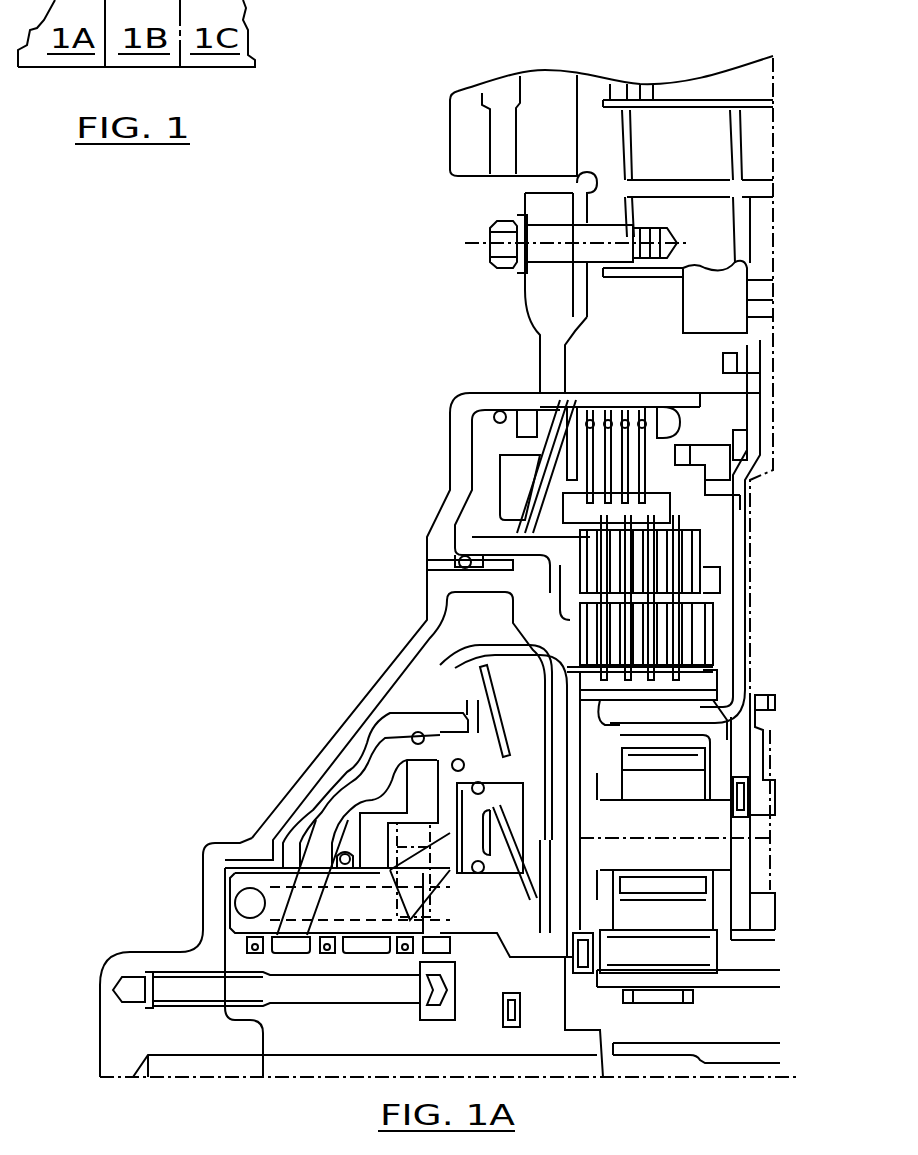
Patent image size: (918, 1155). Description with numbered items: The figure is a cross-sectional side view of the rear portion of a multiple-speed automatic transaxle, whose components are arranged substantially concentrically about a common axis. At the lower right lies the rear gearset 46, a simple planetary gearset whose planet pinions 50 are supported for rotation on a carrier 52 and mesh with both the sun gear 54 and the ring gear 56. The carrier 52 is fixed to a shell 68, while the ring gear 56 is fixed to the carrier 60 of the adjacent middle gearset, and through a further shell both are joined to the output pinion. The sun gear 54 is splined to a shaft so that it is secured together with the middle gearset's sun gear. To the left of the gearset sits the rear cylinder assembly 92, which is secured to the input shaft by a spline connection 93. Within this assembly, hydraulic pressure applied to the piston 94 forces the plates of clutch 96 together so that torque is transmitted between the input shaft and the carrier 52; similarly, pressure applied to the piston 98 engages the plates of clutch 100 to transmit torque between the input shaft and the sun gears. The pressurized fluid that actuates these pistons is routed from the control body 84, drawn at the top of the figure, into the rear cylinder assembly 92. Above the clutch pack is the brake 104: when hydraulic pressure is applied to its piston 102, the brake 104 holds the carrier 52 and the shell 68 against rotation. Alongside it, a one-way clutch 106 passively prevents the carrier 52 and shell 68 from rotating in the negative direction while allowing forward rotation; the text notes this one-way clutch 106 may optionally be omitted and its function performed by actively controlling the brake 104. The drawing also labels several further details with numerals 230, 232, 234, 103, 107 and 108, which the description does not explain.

The control body 84 is at (443, 198).
The clutch plates 230 is at (642, 410).
The brake 104 is at (530, 402).
The bracket 232 is at (725, 405).
The one-way clutch 106 is at (705, 455).
The cavity 108 is at (505, 470).
The piston 102 is at (460, 486).
The spring 107 is at (720, 507).
The plate 234 is at (545, 547).
The clutch 96 is at (688, 548).
The flange 103 is at (530, 583).
The clutch 100 is at (575, 628).
The piston 94 is at (470, 668).
The piston 98 is at (530, 705).
The rear cylinder assembly 92 is at (437, 800).
The ring gear 56 is at (675, 752).
The carrier 60 is at (760, 797).
The shell 68 is at (597, 773).
The carrier 52 is at (597, 790).
The planet pinion 50 is at (675, 909).
The sun gear 54 is at (675, 959).
The spline connection 93 is at (535, 957).
The rear gearset 46 is at (662, 1094).